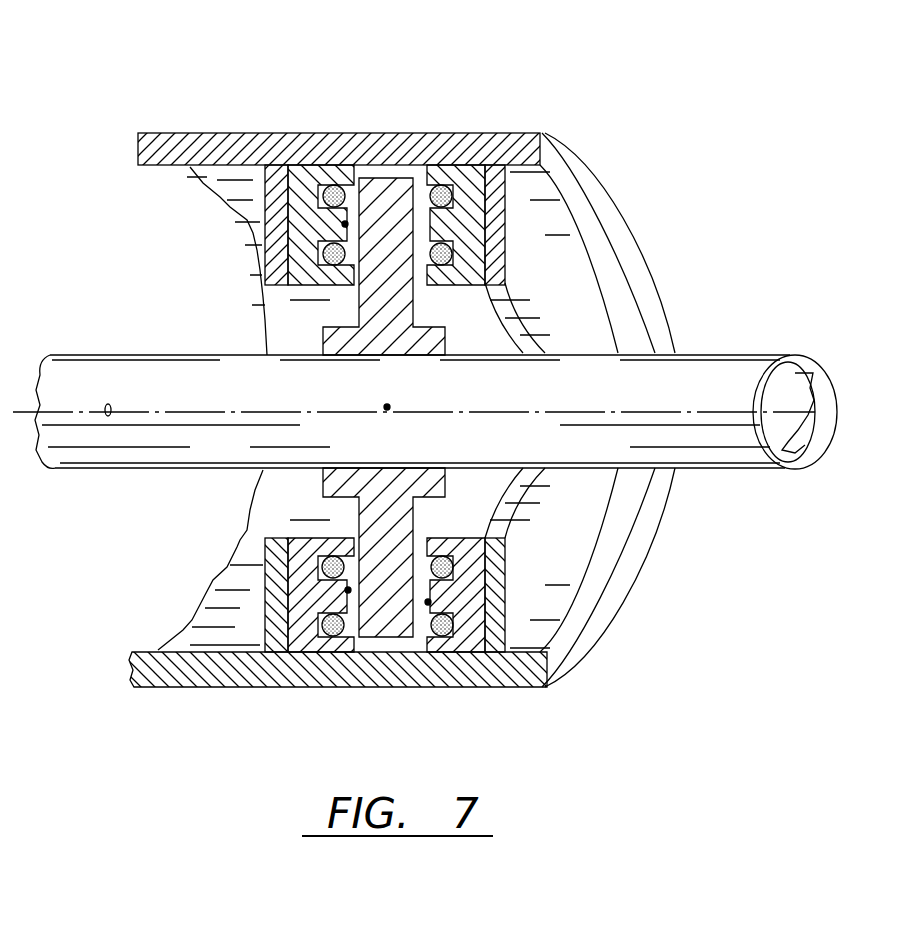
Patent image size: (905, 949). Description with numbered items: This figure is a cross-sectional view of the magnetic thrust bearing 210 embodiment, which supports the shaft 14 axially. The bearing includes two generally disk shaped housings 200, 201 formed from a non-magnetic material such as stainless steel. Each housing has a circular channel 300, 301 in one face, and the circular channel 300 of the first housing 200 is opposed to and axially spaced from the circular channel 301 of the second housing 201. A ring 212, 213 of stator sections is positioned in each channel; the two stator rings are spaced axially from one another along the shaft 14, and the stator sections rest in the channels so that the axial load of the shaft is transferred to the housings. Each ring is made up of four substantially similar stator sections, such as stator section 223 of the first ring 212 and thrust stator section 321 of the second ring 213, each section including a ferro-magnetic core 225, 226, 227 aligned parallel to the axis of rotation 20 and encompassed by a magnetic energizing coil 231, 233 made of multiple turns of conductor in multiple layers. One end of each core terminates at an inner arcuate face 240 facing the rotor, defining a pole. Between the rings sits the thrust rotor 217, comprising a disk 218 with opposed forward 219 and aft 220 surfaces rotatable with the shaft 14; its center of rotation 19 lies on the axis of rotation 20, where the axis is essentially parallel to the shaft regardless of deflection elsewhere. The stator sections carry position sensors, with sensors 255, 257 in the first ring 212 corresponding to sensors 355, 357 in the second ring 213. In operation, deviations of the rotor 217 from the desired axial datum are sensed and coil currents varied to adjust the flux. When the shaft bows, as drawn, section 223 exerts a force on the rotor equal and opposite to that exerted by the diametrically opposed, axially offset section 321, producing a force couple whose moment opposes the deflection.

The shaft 14 is at (247, 398).
The center of rotation 19 is at (390, 405).
The axis of rotation 20 is at (108, 414).
The disk shaped housing 200 is at (556, 272).
The disk shaped housing 201 is at (178, 133).
The thrust bearing 210 is at (578, 136).
The stator ring 212 is at (505, 220).
The stator ring 213 is at (298, 245).
The thrust rotor 217 is at (385, 500).
The disk 218 is at (383, 198).
The forward surface 219 is at (428, 316).
The aft surface 220 is at (352, 311).
The stator section 223 is at (475, 583).
The core 225 is at (452, 652).
The core 226 is at (447, 595).
The core 227 is at (440, 548).
The magnetic energizing coil 231 is at (470, 205).
The magnetic energizing coil 233 is at (443, 648).
The arcuate face 240 is at (410, 565).
The position sensor 255 is at (488, 237).
The position sensor 257 is at (428, 602).
The circular channel 300 is at (472, 190).
The circular channel 301 is at (293, 185).
The thrust stator section 321 is at (296, 217).
The sensor 355 is at (345, 224).
The sensor 357 is at (348, 590).